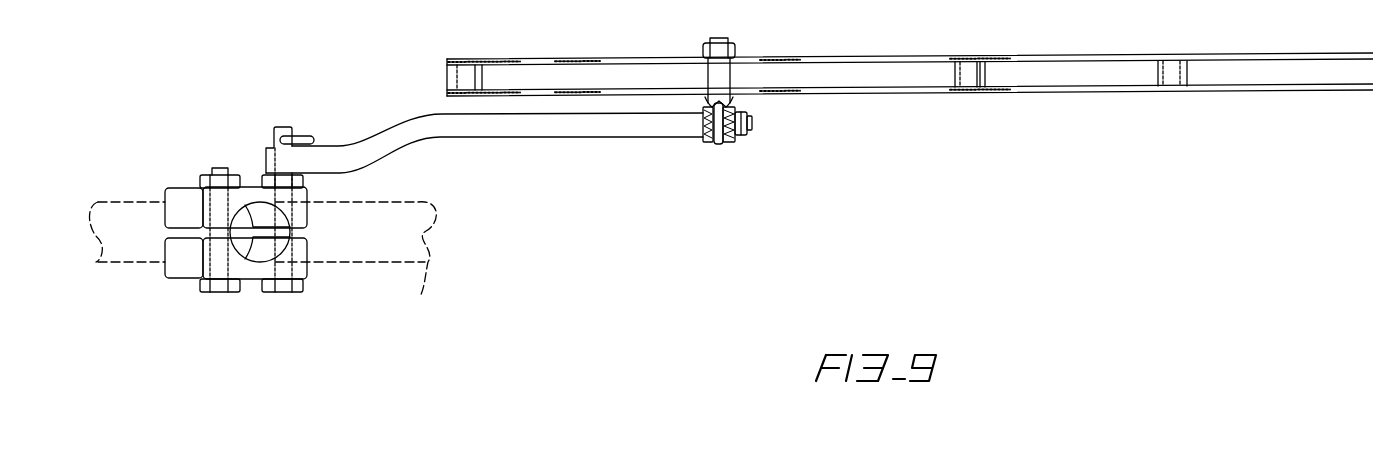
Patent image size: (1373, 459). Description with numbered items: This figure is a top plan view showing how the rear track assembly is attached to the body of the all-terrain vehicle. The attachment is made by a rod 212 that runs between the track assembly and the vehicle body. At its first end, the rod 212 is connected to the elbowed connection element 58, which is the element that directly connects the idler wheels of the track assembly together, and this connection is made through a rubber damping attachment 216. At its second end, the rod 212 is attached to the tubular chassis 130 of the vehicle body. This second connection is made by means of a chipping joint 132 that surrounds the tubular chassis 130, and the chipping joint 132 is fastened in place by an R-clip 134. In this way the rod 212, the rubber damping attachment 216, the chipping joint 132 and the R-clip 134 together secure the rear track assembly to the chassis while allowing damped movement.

The elbowed connection element 58 is at (1142, 58).
The tubular chassis 130 is at (402, 238).
The chipping joint 132 is at (252, 272).
The R-clip 134 is at (318, 143).
The rod 212 is at (623, 125).
The rubber damping attachment 216 is at (727, 144).